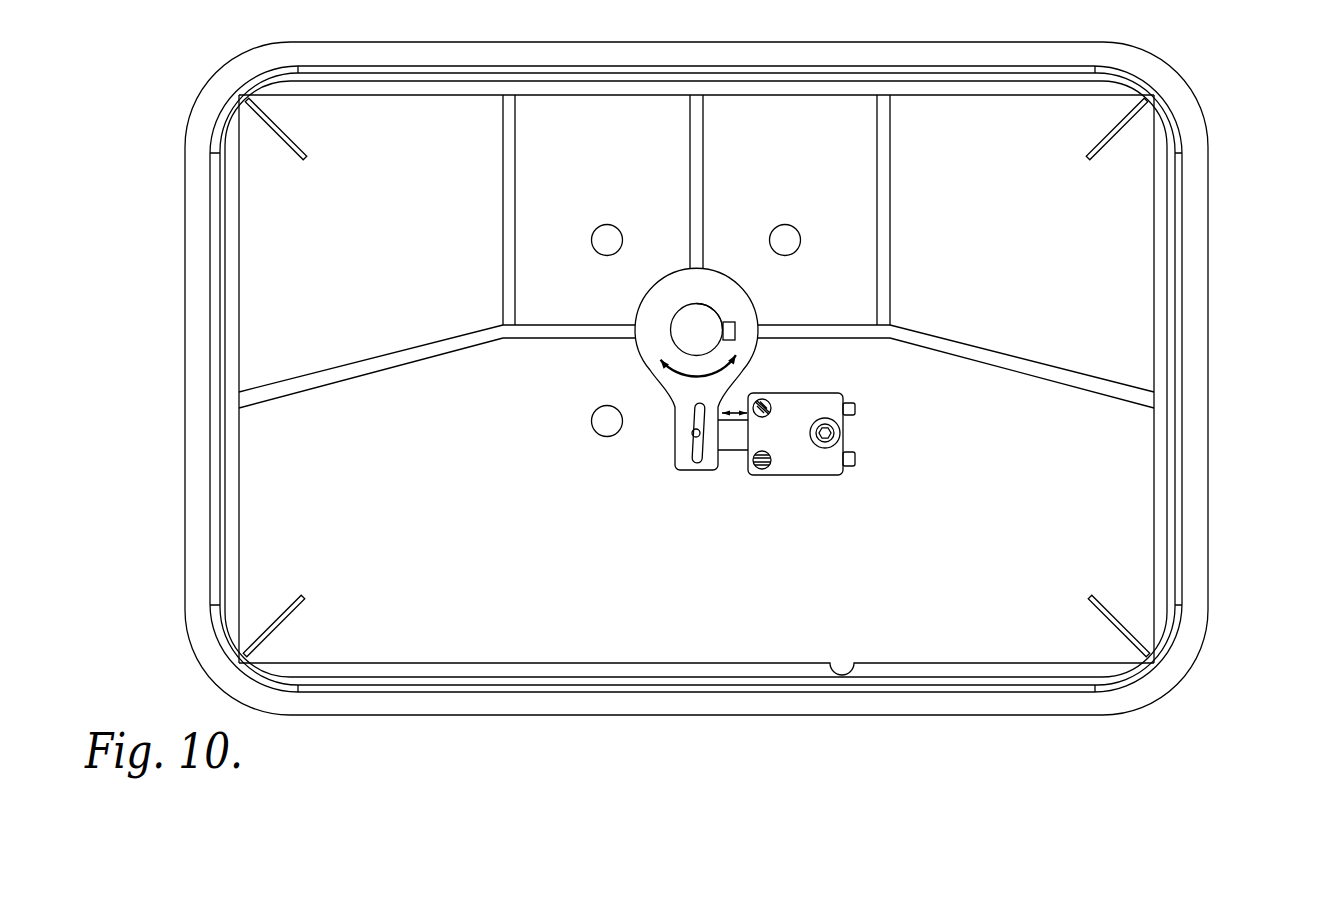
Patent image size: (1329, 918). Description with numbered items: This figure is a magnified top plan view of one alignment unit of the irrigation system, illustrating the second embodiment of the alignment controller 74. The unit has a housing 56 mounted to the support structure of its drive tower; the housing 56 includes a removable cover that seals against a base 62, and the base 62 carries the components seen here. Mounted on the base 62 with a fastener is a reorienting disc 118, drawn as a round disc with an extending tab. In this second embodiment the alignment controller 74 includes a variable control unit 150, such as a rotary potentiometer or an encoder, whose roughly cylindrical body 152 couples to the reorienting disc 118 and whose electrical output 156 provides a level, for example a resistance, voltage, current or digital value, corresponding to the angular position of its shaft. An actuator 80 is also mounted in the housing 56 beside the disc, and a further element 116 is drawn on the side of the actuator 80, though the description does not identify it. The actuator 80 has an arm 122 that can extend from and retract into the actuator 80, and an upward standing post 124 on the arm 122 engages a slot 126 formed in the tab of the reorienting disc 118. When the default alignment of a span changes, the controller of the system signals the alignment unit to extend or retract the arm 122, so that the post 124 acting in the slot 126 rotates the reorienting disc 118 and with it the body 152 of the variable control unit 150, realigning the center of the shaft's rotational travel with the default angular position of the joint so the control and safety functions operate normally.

The housing 56 is at (1210, 287).
The base 62 is at (1140, 199).
The alignment controller 74 is at (597, 365).
The reorienting disc 118 is at (760, 350).
The variable control unit 150 is at (670, 313).
The body 152 is at (713, 320).
The electrical output 156 is at (737, 332).
The slot 126 is at (695, 458).
The upward standing post 124 is at (693, 435).
The arm 122 is at (733, 442).
The actuator 80 is at (807, 465).
The adjustment knob 116 is at (835, 433).